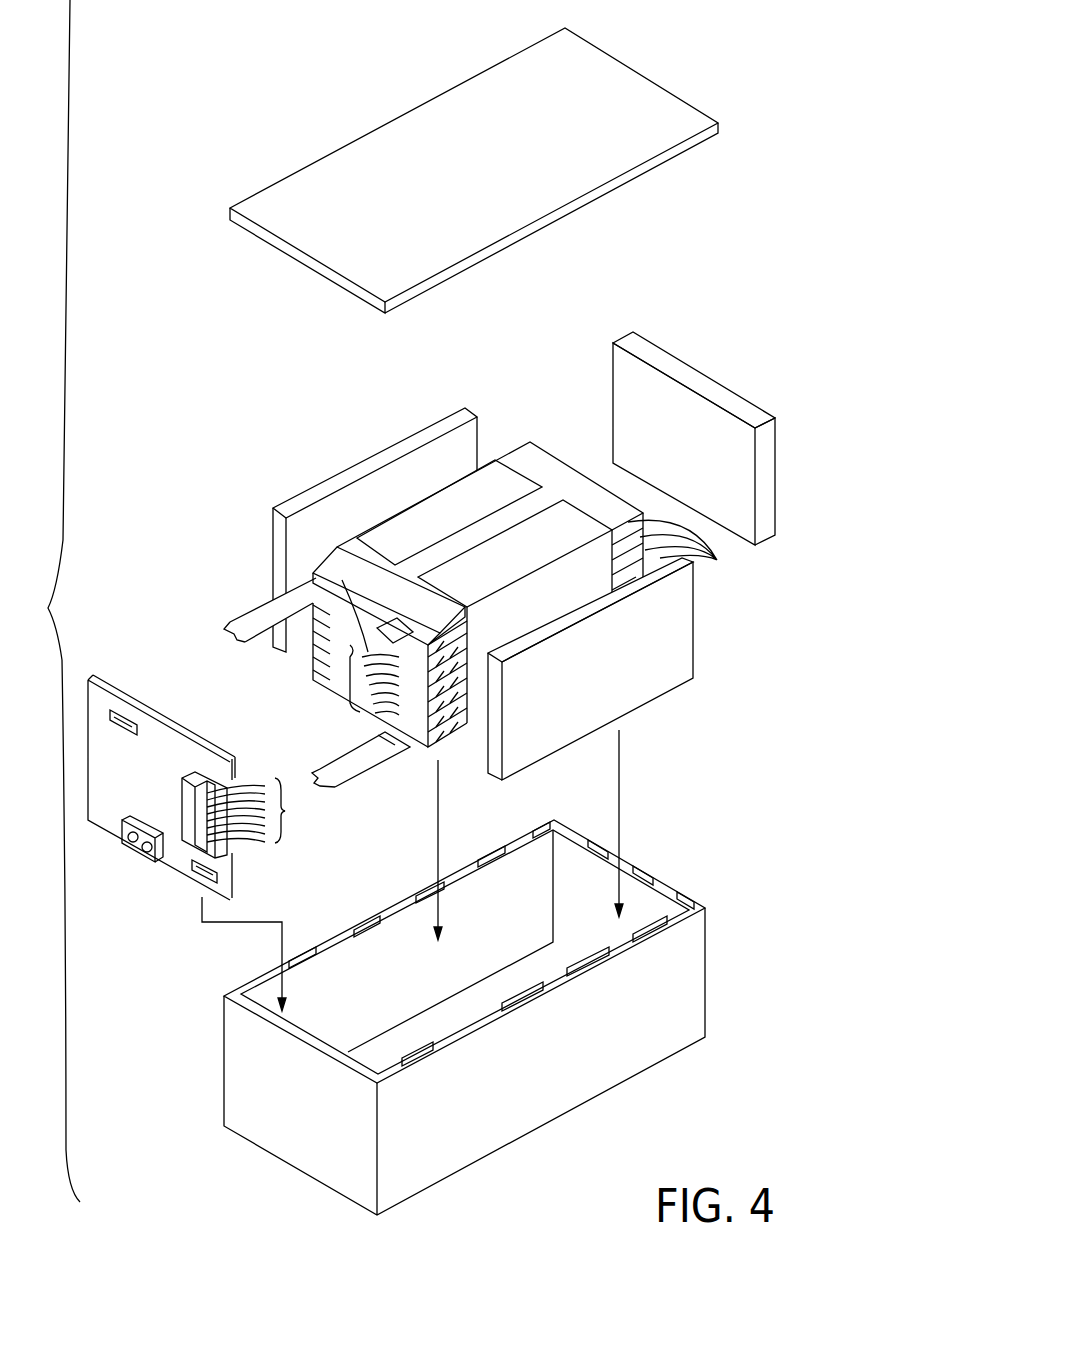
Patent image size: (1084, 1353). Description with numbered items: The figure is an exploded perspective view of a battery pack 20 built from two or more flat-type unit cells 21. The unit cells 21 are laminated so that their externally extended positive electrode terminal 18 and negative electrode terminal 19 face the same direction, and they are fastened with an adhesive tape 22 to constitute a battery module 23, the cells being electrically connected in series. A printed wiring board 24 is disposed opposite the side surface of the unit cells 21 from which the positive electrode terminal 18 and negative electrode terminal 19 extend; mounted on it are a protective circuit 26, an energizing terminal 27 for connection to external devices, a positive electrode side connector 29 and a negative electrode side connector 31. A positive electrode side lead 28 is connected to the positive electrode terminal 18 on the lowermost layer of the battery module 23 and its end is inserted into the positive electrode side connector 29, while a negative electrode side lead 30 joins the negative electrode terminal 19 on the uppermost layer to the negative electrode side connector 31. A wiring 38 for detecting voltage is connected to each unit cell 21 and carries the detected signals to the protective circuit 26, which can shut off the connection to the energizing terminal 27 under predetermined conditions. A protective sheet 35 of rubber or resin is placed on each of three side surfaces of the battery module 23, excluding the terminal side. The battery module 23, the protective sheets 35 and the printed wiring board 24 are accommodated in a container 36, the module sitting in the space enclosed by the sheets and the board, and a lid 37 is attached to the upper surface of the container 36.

The battery pack 20 is at (251, 71).
The lid 37 is at (658, 107).
The protective sheet 35 is at (340, 485).
The battery module 23 is at (423, 507).
The adhesive tape 22 is at (553, 530).
The unit cell 21 is at (689, 548).
The negative electrode terminal 19 is at (317, 573).
The positive electrode terminal 18 is at (397, 637).
The negative electrode side lead 30 is at (240, 620).
The wiring 38 is at (342, 677).
The positive electrode side lead 28 is at (358, 768).
The printed wiring board 24 is at (123, 683).
The negative electrode side connector 31 is at (130, 722).
The protective circuit 26 is at (195, 777).
The energizing terminal 27 is at (147, 853).
The positive electrode side connector 29 is at (220, 878).
The container 36 is at (693, 980).